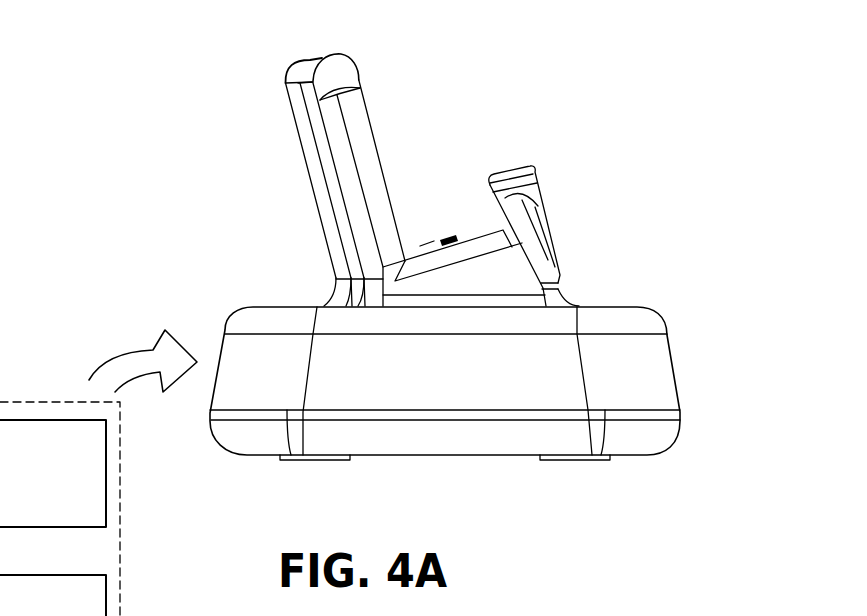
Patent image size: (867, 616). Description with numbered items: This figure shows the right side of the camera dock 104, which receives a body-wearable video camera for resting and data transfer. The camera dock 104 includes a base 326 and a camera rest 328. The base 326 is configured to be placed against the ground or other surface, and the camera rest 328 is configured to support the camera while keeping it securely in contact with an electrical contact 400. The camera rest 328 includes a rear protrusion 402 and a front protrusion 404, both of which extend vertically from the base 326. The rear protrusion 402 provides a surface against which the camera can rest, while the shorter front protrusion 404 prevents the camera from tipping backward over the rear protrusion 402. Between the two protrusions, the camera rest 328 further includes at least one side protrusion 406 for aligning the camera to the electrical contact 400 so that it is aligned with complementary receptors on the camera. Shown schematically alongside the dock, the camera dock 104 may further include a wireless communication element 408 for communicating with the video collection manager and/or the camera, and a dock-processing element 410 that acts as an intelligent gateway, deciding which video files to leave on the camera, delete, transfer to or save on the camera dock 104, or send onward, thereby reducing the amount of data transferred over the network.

The camera dock 104 is at (107, 98).
The camera rest 328 is at (535, 62).
The rear protrusion 402 is at (298, 55).
The front protrusion 404 is at (548, 178).
The electrical contact 400 is at (452, 218).
The side protrusion 406 is at (423, 247).
The base 326 is at (678, 378).
The wireless communication element 408 is at (106, 482).
The dock-processing element 410 is at (94, 595).